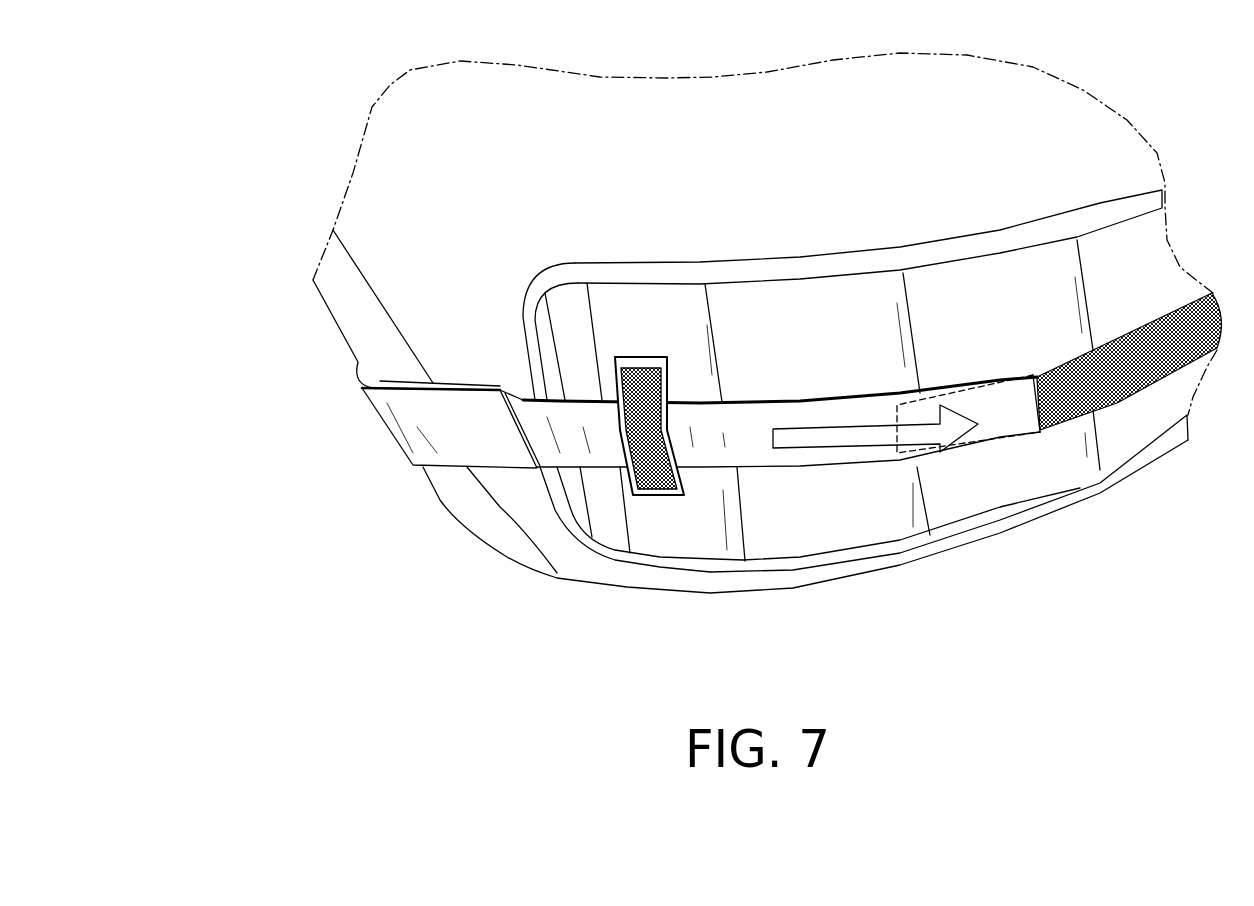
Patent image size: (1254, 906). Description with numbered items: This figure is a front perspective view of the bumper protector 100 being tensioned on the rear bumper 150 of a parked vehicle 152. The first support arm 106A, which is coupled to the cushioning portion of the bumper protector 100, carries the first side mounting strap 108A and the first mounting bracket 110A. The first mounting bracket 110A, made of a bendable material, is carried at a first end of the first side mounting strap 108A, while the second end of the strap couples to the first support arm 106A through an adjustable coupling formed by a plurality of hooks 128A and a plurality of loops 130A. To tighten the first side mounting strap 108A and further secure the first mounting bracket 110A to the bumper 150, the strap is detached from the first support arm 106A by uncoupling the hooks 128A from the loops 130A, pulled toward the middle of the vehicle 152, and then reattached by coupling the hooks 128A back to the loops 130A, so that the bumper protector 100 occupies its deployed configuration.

The bumper protector 100 is at (857, 256).
The first support arm 106A is at (653, 263).
The first side mounting strap 108A is at (760, 460).
The first mounting bracket 110A is at (387, 433).
The plurality of hooks 128A is at (997, 445).
The plurality of loops 130A is at (1117, 403).
The bumper 150 is at (447, 503).
The vehicle 152 is at (402, 170).